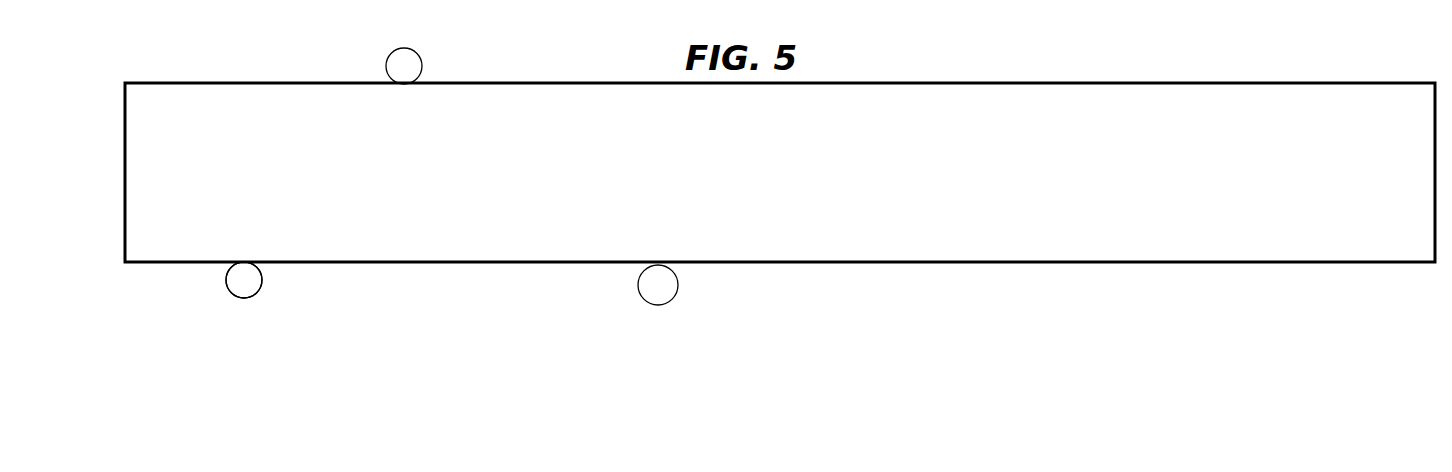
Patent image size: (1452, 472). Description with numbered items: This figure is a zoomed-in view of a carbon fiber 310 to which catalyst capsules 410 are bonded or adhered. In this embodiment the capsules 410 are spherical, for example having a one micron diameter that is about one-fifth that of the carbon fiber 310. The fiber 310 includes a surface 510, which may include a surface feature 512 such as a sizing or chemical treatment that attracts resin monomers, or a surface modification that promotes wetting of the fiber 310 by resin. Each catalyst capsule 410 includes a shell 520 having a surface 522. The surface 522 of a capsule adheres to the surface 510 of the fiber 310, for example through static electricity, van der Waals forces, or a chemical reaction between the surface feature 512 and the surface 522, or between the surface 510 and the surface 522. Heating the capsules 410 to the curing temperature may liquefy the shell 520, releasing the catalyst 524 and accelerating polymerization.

The surface 510 is at (348, 264).
The surface feature 512 is at (139, 190).
The surface 522 is at (223, 279).
The shell 520 is at (234, 297).
The catalyst 524 is at (253, 277).
The catalyst capsule 410 is at (386, 62).
The carbon fiber 310 is at (582, 264).